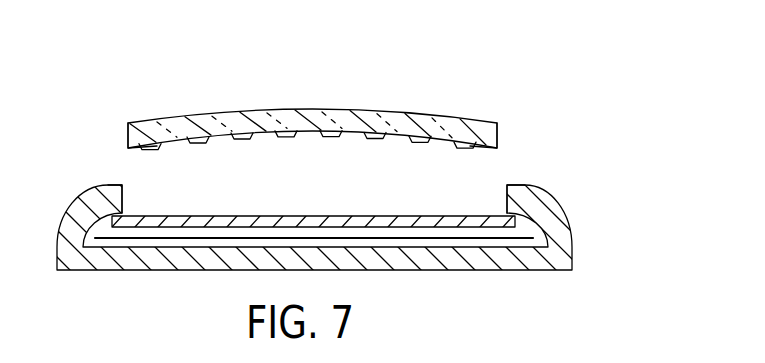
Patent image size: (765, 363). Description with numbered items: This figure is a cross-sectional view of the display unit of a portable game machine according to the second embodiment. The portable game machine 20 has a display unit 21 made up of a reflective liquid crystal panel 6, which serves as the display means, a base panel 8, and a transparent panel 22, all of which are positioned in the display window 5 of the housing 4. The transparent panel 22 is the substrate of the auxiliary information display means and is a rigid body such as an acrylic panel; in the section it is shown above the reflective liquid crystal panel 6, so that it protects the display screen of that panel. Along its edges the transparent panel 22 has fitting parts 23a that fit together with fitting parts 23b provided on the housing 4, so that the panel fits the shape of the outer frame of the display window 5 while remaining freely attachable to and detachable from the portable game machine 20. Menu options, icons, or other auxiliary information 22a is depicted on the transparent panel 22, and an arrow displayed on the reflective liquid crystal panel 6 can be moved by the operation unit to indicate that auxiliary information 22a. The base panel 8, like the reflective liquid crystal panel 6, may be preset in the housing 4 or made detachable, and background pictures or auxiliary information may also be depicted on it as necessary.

The housing 4 is at (570, 256).
The display window 5 is at (312, 199).
The reflective liquid crystal panel 6 is at (448, 218).
The base panel 8 is at (507, 256).
The portable game machine 20 is at (492, 68).
The display unit 21 is at (634, 160).
The transparent panel 22 is at (462, 127).
The auxiliary information 22a is at (152, 150).
The fitting parts 23a is at (128, 140).
The fitting parts 23b is at (121, 187).